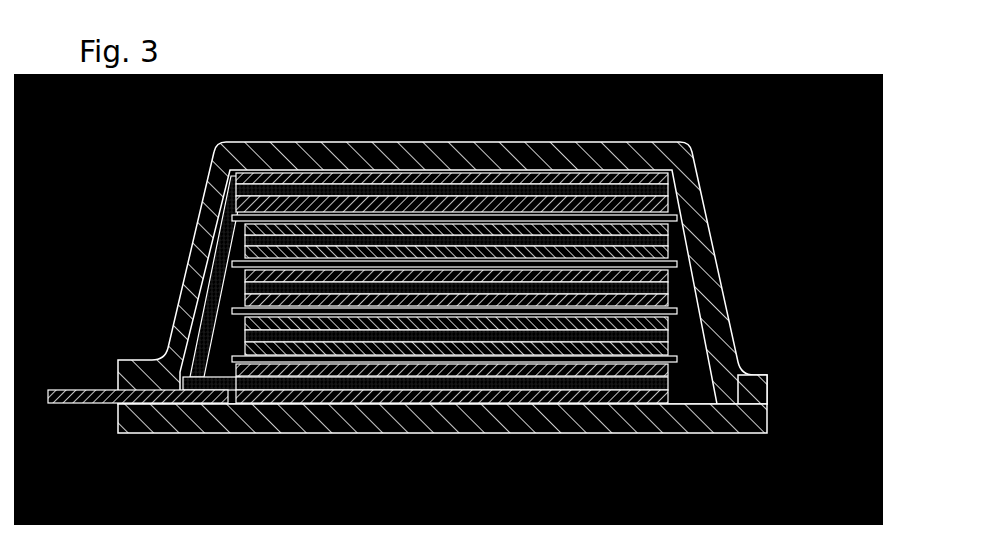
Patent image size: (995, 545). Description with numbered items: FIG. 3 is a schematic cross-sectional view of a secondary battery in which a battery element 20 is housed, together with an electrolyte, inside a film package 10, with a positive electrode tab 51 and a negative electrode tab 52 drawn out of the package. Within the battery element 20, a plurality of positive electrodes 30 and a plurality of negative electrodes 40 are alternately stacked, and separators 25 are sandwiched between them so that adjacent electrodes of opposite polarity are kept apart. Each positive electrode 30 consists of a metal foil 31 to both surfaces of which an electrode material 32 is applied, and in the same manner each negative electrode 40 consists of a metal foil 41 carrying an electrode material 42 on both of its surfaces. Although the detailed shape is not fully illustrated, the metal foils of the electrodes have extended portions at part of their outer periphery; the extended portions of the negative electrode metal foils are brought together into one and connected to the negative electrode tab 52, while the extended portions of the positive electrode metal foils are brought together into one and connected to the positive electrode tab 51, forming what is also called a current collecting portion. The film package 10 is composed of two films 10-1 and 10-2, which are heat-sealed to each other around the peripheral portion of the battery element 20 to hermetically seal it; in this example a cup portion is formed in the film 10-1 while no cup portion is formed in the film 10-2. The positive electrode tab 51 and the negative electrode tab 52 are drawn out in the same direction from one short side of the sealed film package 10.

The film package 10 is at (495, 319).
The film 10-1 is at (757, 377).
The film 10-2 is at (471, 450).
The battery element 20 is at (322, 406).
The separator 25 is at (603, 265).
The positive electrode 30 is at (232, 240).
The metal foil 31 is at (438, 235).
The electrode material 32 is at (486, 240).
The negative electrode 40 is at (676, 203).
The metal foil 41 is at (548, 195).
The electrode material 42 is at (590, 210).
The positive electrode tab 51 is at (138, 367).
The negative electrode tab 52 is at (80, 390).